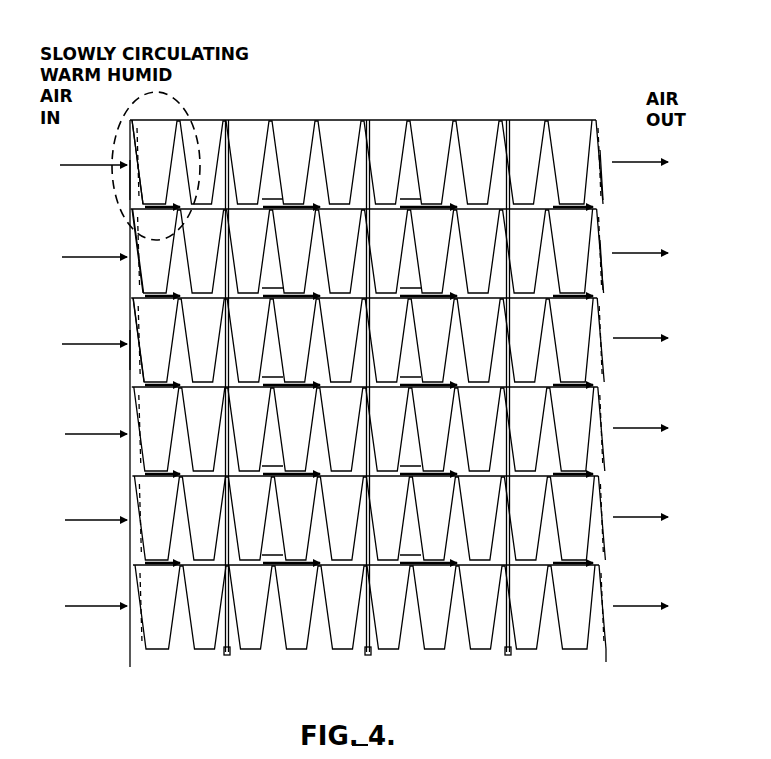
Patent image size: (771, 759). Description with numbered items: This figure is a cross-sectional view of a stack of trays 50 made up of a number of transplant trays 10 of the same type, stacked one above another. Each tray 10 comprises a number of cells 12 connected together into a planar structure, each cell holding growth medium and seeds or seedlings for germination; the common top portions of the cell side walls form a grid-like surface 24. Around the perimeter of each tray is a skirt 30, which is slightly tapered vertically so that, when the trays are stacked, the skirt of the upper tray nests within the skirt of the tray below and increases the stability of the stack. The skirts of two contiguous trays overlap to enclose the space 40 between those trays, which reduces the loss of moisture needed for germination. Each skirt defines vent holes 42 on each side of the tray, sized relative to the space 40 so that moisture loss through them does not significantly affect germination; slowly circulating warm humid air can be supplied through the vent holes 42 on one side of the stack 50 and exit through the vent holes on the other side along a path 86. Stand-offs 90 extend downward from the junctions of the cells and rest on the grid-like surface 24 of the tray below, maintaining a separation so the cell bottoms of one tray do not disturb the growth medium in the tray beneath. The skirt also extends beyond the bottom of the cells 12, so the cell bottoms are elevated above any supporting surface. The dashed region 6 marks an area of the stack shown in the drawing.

The circulating air region 6 is at (192, 103).
The transplant tray 10 is at (113, 121).
The cells 12 is at (283, 119).
The grid-like surface 24 is at (432, 119).
The skirt 30 is at (130, 146).
The space 40 is at (342, 368).
The vent holes 42 is at (128, 166).
The stack of trays 50 is at (374, 350).
The path 86 is at (96, 436).
The stand-offs 90 is at (504, 176).